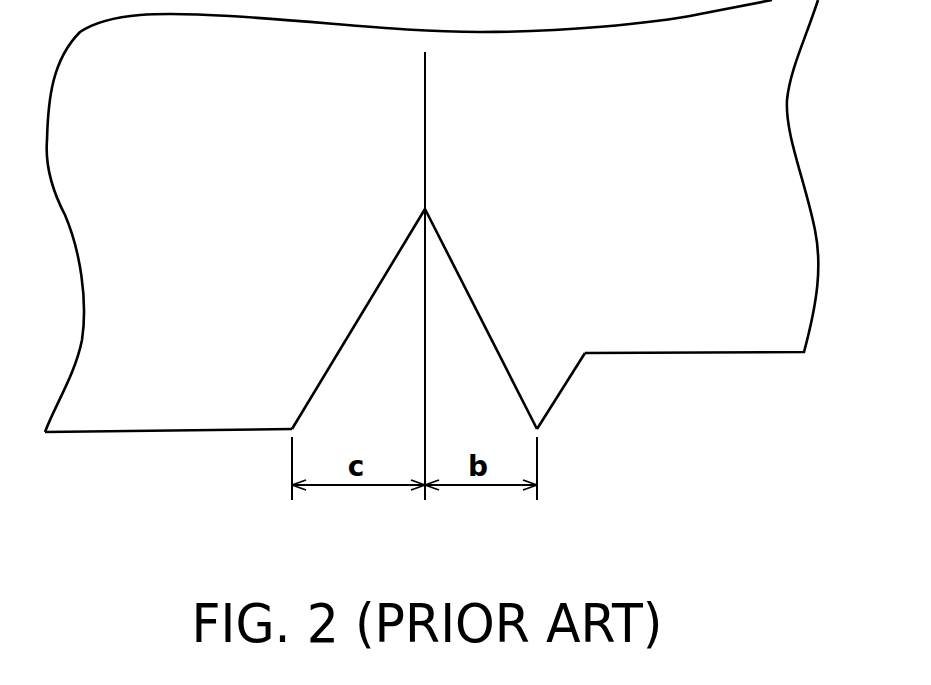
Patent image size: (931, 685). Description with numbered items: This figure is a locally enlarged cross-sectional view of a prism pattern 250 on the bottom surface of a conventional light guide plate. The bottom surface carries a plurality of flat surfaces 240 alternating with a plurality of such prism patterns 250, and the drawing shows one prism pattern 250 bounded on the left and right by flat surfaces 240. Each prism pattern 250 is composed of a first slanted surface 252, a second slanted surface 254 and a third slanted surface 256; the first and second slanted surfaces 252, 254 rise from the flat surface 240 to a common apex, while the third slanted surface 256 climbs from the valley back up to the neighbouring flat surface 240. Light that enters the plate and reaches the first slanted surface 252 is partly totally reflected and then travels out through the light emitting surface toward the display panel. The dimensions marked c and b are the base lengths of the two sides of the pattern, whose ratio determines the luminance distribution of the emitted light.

The flat surface 240 is at (157, 433).
The prism pattern 250 is at (403, 281).
The first slanted surface 252 is at (328, 367).
The second slanted surface 254 is at (466, 285).
The third slanted surface 256 is at (562, 388).